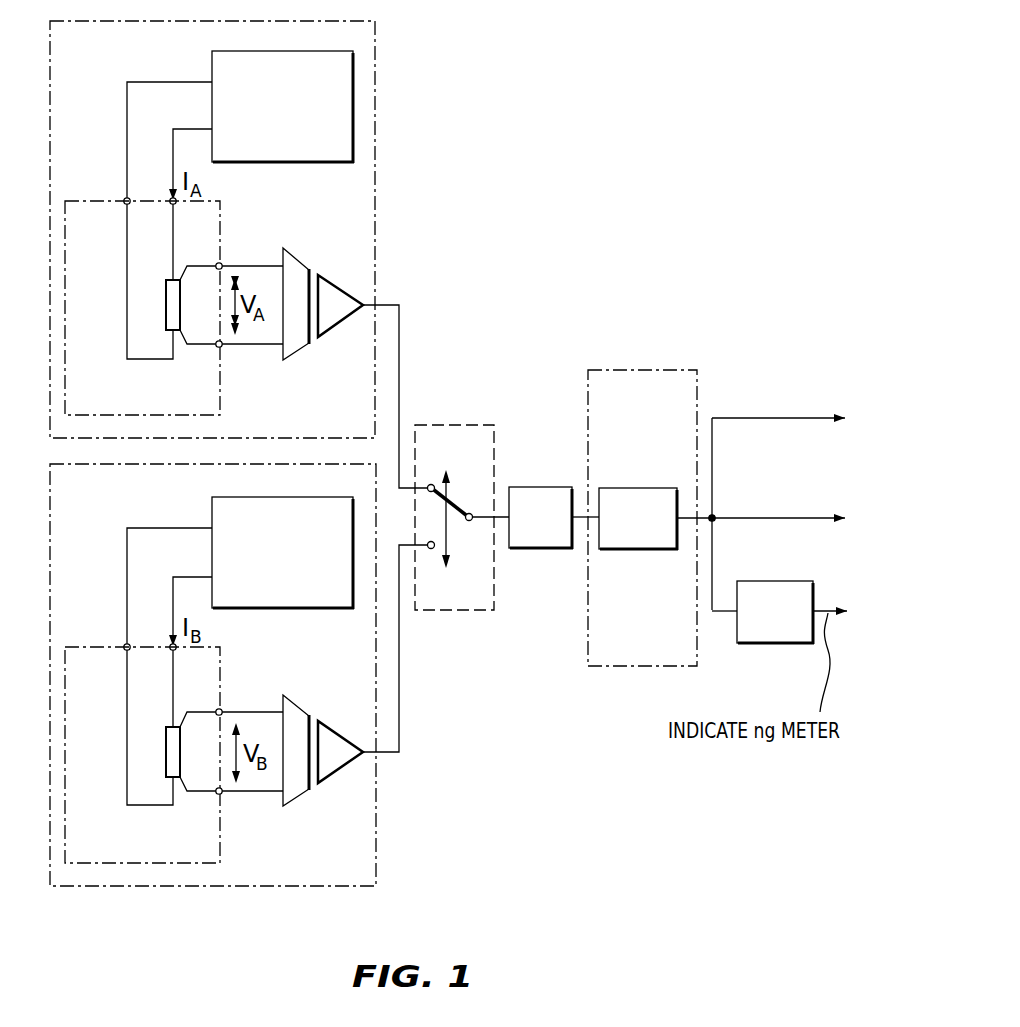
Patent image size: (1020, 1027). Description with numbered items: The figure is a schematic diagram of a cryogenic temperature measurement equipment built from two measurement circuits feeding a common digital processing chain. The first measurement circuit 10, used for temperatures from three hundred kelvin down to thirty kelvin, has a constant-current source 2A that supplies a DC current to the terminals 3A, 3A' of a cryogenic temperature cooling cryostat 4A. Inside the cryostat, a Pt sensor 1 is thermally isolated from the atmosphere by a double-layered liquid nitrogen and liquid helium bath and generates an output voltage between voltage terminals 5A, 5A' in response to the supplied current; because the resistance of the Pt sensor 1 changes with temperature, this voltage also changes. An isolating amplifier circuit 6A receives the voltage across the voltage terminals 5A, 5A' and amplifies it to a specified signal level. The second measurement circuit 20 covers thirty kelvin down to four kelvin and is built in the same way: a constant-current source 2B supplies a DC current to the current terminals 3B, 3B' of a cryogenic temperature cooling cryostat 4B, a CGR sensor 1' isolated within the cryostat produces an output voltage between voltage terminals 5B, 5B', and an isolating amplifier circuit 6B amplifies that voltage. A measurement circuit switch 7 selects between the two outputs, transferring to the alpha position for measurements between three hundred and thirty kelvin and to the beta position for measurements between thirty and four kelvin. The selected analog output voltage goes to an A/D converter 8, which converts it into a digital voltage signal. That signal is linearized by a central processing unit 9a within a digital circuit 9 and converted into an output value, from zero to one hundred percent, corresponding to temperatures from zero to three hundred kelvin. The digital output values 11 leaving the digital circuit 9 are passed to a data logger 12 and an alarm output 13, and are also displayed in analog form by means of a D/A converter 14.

The first measurement circuit 10 is at (383, 89).
The second measurement circuit 20 is at (381, 843).
The constant-current source 2A is at (212, 59).
The constant-current source 2B is at (212, 505).
The terminal 3A is at (101, 182).
The terminal 3A' is at (132, 161).
The current terminal 3B is at (101, 628).
The current terminal 3B' is at (132, 607).
The cryogenic temperature cooling cryostat 4A is at (102, 299).
The cryogenic temperature cooling cryostat 4B is at (108, 761).
The Pt sensor 1 is at (141, 312).
The CGR sensor 1' is at (136, 773).
The voltage terminal 5A is at (241, 241).
The voltage terminal 5A' is at (241, 372).
The voltage terminal 5B is at (246, 684).
The voltage terminal 5B' is at (243, 820).
The isolating amplifier circuit 6A is at (303, 270).
The isolating amplifier circuit 6B is at (302, 722).
The measurement circuit switch 7 is at (458, 421).
The A/D converter 8 is at (542, 487).
The digital circuit 9 is at (635, 368).
The CPU 9a is at (641, 549).
The digital output values 11 is at (712, 518).
The data logger 12 is at (761, 418).
The alarm output 13 is at (755, 517).
The D/A converter 14 is at (760, 643).